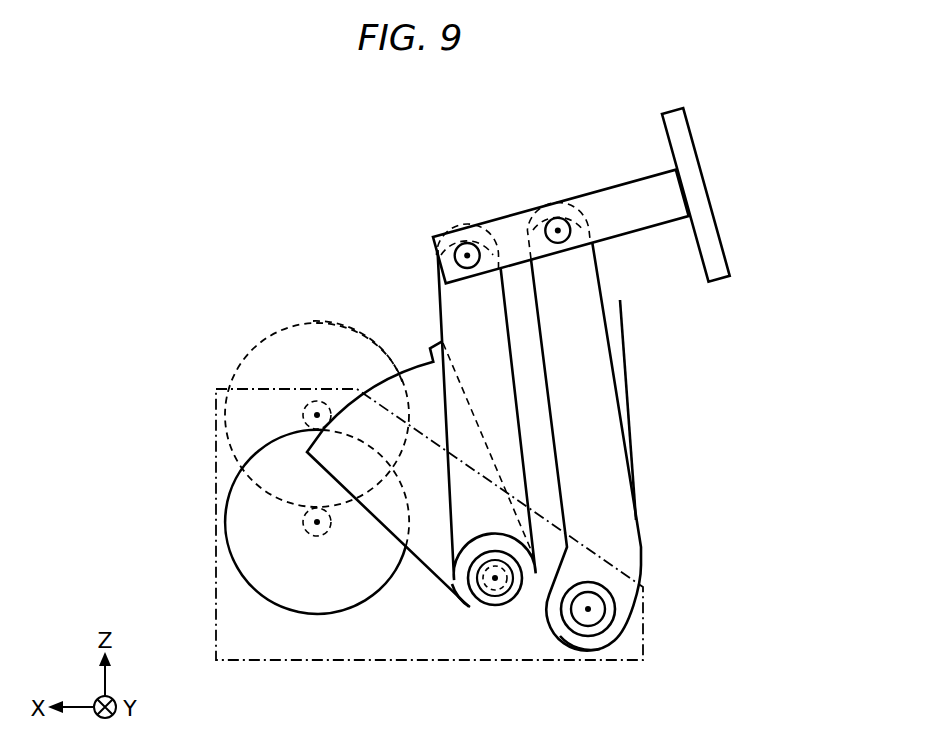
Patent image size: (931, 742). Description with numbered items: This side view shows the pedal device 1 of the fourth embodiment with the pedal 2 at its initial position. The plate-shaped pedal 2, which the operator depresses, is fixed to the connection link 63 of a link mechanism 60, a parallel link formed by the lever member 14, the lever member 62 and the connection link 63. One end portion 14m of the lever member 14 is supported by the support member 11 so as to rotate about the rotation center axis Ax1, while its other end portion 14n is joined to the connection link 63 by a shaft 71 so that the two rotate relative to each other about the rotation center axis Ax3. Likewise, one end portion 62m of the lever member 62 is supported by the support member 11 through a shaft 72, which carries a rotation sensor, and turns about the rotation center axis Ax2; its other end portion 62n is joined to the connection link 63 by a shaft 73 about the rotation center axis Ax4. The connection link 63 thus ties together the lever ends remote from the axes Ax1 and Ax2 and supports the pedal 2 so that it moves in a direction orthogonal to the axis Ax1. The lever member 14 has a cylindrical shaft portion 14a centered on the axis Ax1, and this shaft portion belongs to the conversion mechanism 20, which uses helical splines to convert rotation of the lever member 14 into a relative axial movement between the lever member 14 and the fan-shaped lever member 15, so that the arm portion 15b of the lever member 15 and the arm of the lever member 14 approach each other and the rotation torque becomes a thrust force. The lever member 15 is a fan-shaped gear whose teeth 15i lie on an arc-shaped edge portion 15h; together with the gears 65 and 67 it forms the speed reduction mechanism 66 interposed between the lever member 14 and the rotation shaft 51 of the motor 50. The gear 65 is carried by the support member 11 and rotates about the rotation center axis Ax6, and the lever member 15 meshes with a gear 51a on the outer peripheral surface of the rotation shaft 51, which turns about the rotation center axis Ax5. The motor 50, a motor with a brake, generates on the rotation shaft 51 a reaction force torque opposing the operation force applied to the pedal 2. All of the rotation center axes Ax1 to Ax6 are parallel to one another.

The pedal device 1 is at (764, 131).
The pedal 2 is at (705, 184).
The support member 11 is at (645, 653).
The lever member 14 is at (437, 402).
The shaft portion 14a is at (453, 308).
The one end portion 14m is at (463, 603).
The other end portion 14n is at (498, 242).
The lever member 15 is at (388, 453).
The arm portion 15b is at (415, 366).
The arc-shaped edge portion 15h is at (347, 327).
The teeth 15i is at (381, 385).
The conversion mechanism 20 is at (478, 598).
The motor 50 is at (242, 576).
The rotation shaft 51 is at (225, 508).
The gear 51a is at (305, 505).
The link mechanism 60 is at (628, 414).
The lever member 62 is at (572, 327).
The one end portion 62m is at (614, 630).
The other end portion 62n is at (591, 222).
The connection link 63 is at (630, 197).
The gear 65 is at (311, 398).
The speed reduction mechanism 66 is at (276, 415).
The gear 67 is at (258, 343).
The shaft 71 is at (454, 243).
The shaft 72 is at (612, 604).
The shaft 73 is at (544, 221).
The rotation center axis Ax1 is at (496, 582).
The rotation center axis Ax2 is at (589, 612).
The rotation center axis Ax3 is at (467, 252).
The rotation center axis Ax4 is at (558, 228).
The rotation center axis Ax5 is at (315, 522).
The rotation center axis Ax6 is at (315, 415).